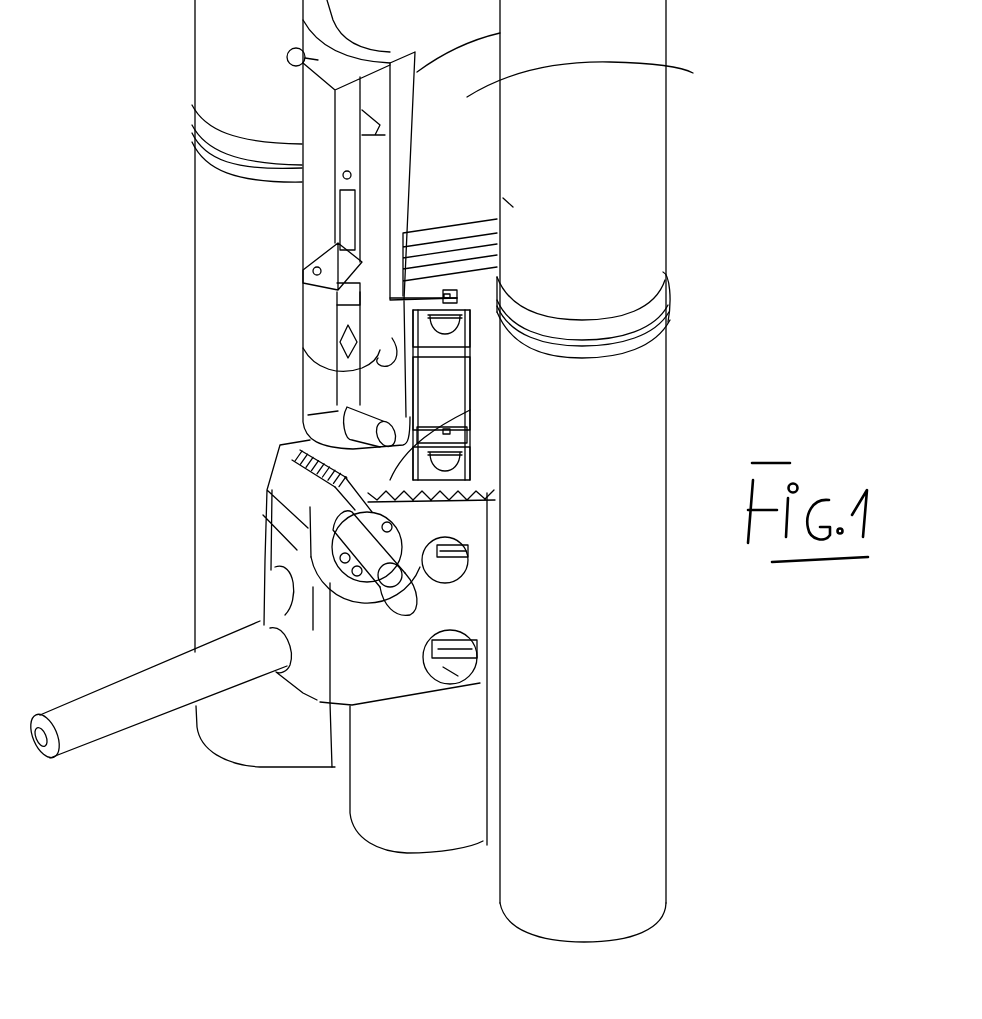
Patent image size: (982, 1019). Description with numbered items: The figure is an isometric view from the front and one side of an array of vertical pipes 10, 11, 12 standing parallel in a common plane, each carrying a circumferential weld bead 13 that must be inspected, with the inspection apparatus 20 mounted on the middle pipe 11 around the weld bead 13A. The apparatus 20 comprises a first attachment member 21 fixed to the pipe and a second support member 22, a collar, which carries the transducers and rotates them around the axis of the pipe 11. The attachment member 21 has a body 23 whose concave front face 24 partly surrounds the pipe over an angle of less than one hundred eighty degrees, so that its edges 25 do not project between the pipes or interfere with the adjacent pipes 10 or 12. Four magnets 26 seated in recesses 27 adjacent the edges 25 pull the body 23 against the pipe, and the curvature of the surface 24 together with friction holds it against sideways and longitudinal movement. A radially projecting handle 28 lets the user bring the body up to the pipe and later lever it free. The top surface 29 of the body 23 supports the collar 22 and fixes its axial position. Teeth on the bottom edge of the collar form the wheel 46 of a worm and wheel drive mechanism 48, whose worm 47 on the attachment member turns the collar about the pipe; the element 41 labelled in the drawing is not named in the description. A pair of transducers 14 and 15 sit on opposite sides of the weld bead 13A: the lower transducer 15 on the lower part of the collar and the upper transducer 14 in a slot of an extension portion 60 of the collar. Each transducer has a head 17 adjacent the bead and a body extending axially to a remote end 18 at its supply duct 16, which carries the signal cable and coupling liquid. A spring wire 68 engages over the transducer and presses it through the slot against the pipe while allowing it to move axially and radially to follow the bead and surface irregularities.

The pipe 10 is at (203, 52).
The pipe 11 is at (666, 70).
The pipe 12 is at (627, 185).
The circumferential weld bead 13 is at (672, 297).
The weld bead 13A is at (447, 248).
The transducer 14 is at (318, 187).
The transducer 15 is at (303, 348).
The supply duct 16 is at (289, 57).
The head 17 is at (305, 272).
The remote end 18 is at (308, 402).
The apparatus 20 is at (232, 551).
The attachment member 21 is at (473, 600).
The support member 22 is at (487, 420).
The body 23 is at (372, 690).
The front face 24 is at (425, 540).
The edges 25 is at (470, 500).
The magnets 26 is at (468, 557).
The recesses 27 is at (447, 675).
The handle 28 is at (93, 730).
The top surface 29 is at (292, 460).
The gear 41 is at (302, 682).
The wheel 46 is at (470, 390).
The worm 47 is at (219, 773).
The drive mechanism 48 is at (322, 575).
The extension portion 60 is at (500, 32).
The spring wire 68 is at (383, 334).